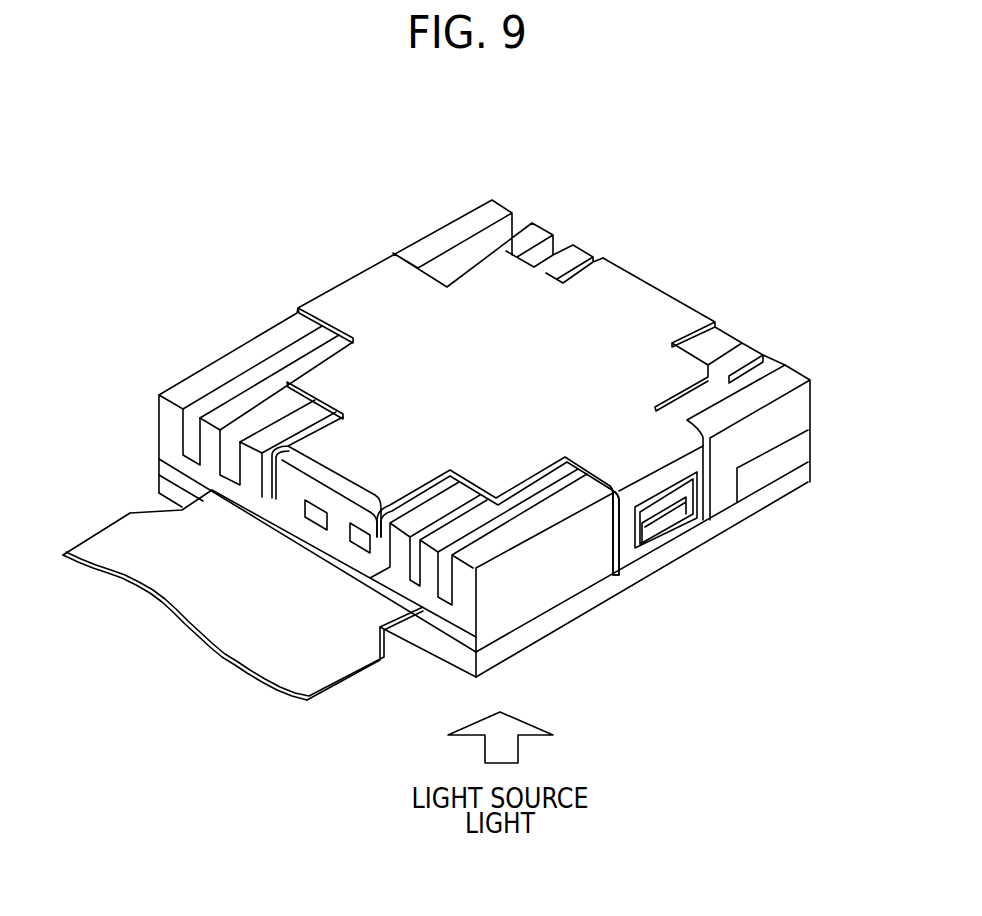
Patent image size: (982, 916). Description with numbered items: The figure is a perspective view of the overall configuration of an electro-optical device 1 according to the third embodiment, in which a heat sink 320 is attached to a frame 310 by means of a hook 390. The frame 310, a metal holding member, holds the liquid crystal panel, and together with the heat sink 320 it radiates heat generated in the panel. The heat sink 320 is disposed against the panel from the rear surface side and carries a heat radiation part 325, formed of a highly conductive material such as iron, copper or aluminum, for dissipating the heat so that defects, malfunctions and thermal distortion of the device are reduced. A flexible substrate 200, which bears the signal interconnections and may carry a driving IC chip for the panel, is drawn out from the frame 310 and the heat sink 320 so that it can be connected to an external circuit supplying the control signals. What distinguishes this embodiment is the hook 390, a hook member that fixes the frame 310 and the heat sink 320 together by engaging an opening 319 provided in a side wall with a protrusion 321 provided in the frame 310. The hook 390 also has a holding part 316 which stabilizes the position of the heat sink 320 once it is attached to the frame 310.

The electro-optical device 1 is at (736, 224).
The flexible substrate 200 is at (108, 529).
The frame 310 is at (752, 504).
The holding part 316 is at (340, 518).
The opening 319 is at (646, 506).
The heat sink 320 is at (797, 418).
The protrusion 321 is at (665, 525).
The heat radiation part 325 is at (156, 371).
The hook 390 is at (627, 560).